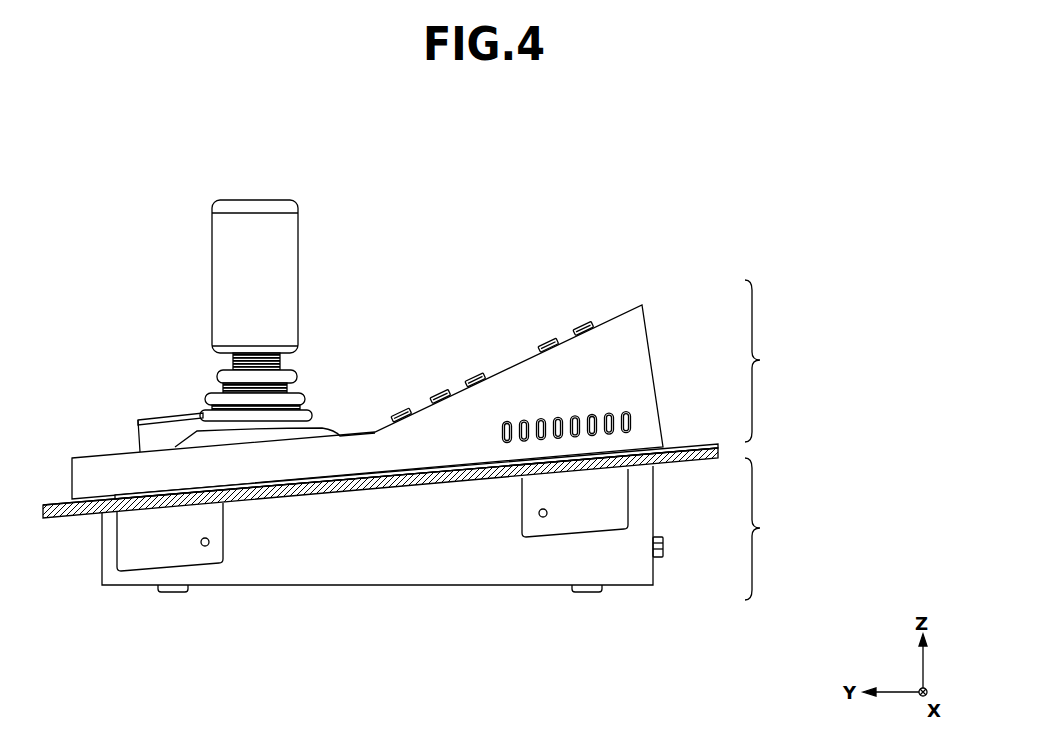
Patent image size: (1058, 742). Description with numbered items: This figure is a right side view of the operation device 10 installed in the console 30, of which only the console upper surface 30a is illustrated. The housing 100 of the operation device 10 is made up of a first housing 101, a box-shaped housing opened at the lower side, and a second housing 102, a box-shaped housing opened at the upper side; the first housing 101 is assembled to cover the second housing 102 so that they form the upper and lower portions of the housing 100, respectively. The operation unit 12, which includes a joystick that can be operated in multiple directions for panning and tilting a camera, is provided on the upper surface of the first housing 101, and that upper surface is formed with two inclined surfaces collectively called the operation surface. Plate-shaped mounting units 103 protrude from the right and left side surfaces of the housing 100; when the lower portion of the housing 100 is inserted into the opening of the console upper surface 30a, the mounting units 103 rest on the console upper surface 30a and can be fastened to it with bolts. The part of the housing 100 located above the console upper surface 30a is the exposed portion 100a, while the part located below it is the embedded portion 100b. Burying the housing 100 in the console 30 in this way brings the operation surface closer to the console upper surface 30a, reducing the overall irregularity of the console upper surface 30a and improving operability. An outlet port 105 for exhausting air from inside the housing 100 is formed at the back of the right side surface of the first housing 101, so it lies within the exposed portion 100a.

The operation device 10 is at (417, 313).
The operation unit 12 is at (322, 398).
The console 30 is at (58, 503).
The console upper surface 30a is at (702, 446).
The housing 100 is at (458, 645).
The exposed portion 100a is at (845, 361).
The embedded portion 100b is at (845, 529).
The first housing 101 is at (370, 462).
The second housing 102 is at (428, 562).
The mounting unit 103 is at (263, 492).
The outlet port 105 is at (612, 410).